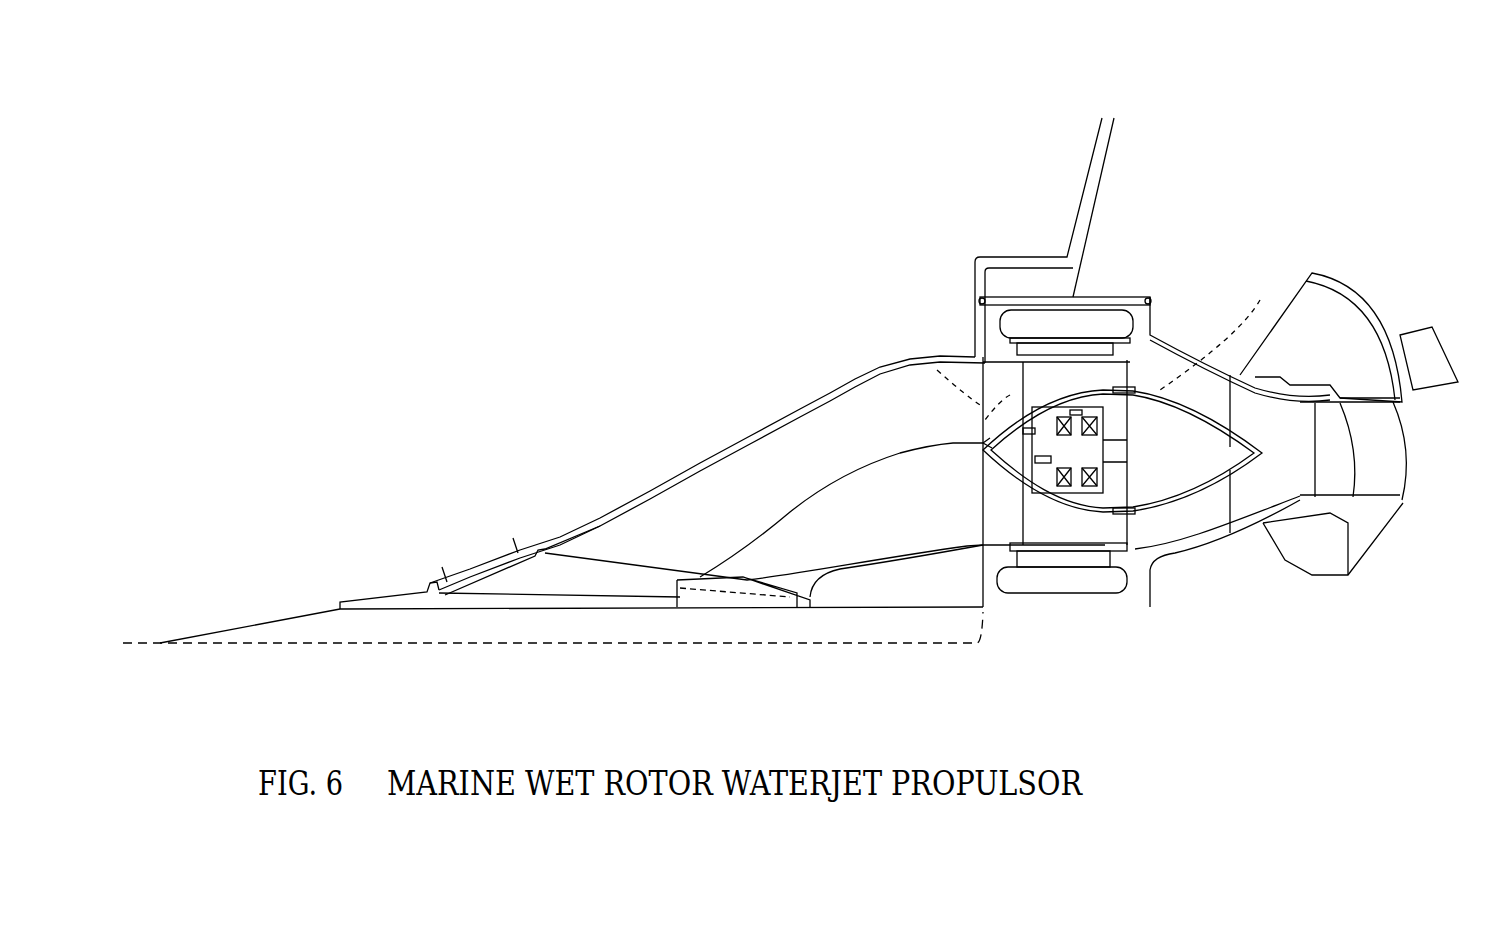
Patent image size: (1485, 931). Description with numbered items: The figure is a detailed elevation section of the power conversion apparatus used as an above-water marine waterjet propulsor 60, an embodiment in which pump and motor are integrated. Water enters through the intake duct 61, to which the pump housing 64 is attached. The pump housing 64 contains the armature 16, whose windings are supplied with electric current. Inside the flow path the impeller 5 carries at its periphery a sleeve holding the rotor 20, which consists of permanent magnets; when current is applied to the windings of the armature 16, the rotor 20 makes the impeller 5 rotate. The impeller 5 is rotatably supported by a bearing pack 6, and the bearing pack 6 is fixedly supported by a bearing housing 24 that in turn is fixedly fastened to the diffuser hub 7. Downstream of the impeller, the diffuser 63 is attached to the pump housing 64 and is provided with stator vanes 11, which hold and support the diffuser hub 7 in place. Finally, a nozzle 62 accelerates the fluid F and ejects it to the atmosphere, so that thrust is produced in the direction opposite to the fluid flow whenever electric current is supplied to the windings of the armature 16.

The impeller 5 is at (923, 357).
The bearing pack 6 is at (1127, 433).
The diffuser hub 7 is at (1205, 333).
The stator vanes 11 is at (1212, 399).
The armature 16 is at (1142, 250).
The rotor 20 is at (1202, 250).
The bearing housing 24 is at (1107, 490).
The waterjet propulsor 60 is at (1007, 245).
The intake duct 61 is at (842, 466).
The nozzle 62 is at (1313, 457).
The diffuser 63 is at (1290, 248).
The pump housing 64 is at (997, 343).
The fluid F is at (1294, 470).